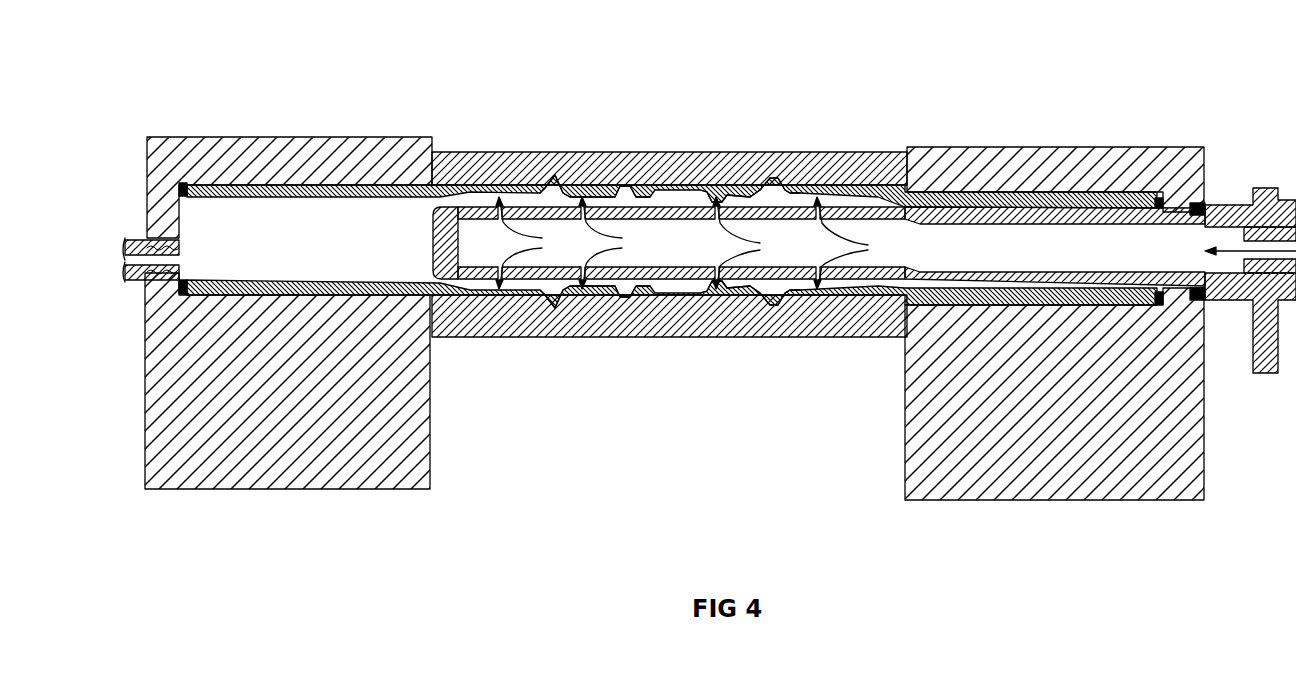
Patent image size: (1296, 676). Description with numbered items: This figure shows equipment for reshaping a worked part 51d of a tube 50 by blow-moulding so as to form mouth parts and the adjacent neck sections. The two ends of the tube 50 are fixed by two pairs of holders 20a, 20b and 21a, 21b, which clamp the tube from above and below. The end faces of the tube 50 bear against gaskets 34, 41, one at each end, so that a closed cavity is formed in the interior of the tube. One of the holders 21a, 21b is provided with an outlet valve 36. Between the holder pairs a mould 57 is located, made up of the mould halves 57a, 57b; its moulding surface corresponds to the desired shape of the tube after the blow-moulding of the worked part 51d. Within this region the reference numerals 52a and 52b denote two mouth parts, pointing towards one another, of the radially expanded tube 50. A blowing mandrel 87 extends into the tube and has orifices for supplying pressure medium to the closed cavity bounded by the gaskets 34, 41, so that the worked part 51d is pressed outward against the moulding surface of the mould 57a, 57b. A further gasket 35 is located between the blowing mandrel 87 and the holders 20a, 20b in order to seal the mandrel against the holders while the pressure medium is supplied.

The outlet valve 36 is at (133, 240).
The gasket 41 is at (187, 185).
The holder 21a is at (330, 150).
The holder 21b is at (293, 458).
The tube 50 is at (463, 178).
The mouth part 52b is at (518, 188).
The worked part of the tube 51d is at (669, 193).
The mouth part 52a is at (767, 187).
The mould 57a is at (850, 163).
The mould 57b is at (858, 340).
The mould 57 is at (550, 340).
The blowing mandrel 87 is at (972, 215).
The holder 20a is at (1093, 158).
The holder 20b is at (1057, 473).
The gasket 34 is at (1207, 170).
The gasket 35 is at (1204, 204).